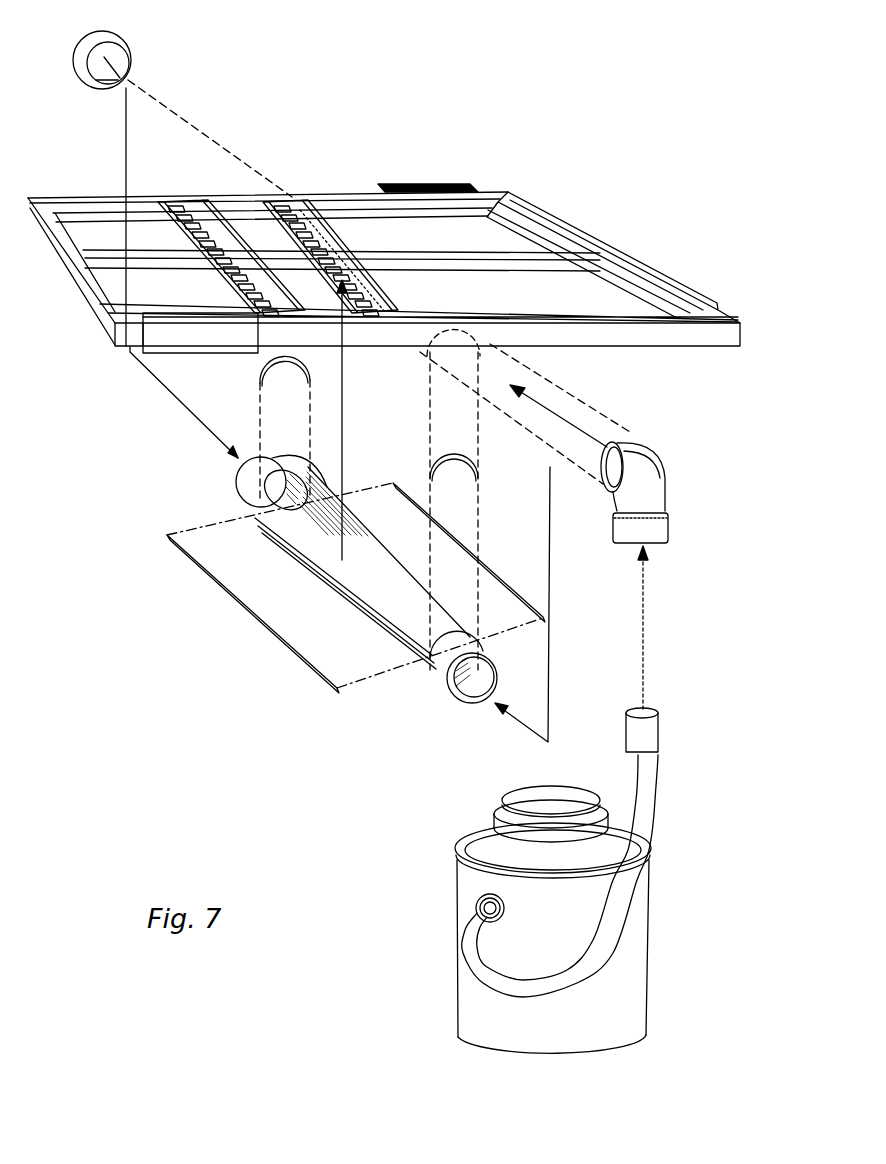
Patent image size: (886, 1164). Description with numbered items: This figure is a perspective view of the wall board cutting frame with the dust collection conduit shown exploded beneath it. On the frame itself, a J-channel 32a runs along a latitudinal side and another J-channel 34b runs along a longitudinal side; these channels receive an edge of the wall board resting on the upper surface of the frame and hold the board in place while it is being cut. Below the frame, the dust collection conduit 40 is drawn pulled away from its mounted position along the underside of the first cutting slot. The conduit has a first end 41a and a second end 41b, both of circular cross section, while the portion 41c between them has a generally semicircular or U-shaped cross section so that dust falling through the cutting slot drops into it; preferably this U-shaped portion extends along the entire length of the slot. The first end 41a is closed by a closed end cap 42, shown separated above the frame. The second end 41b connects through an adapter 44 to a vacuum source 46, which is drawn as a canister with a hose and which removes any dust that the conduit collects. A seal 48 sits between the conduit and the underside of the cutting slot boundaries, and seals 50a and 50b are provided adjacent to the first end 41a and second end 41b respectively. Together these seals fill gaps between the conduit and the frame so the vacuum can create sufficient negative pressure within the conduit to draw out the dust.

The J-channel 32a is at (690, 291).
The J-channel 34b is at (448, 190).
The dust collection conduit 40 is at (327, 597).
The first end 41a is at (240, 488).
The second end 41b is at (443, 680).
The U shaped portion 41c is at (350, 600).
The closed end cap 42 is at (133, 62).
The adapter 44 is at (657, 477).
The vacuum source 46 is at (633, 953).
The seal 48 is at (200, 565).
The seal 50a is at (258, 378).
The seal 50b is at (440, 450).